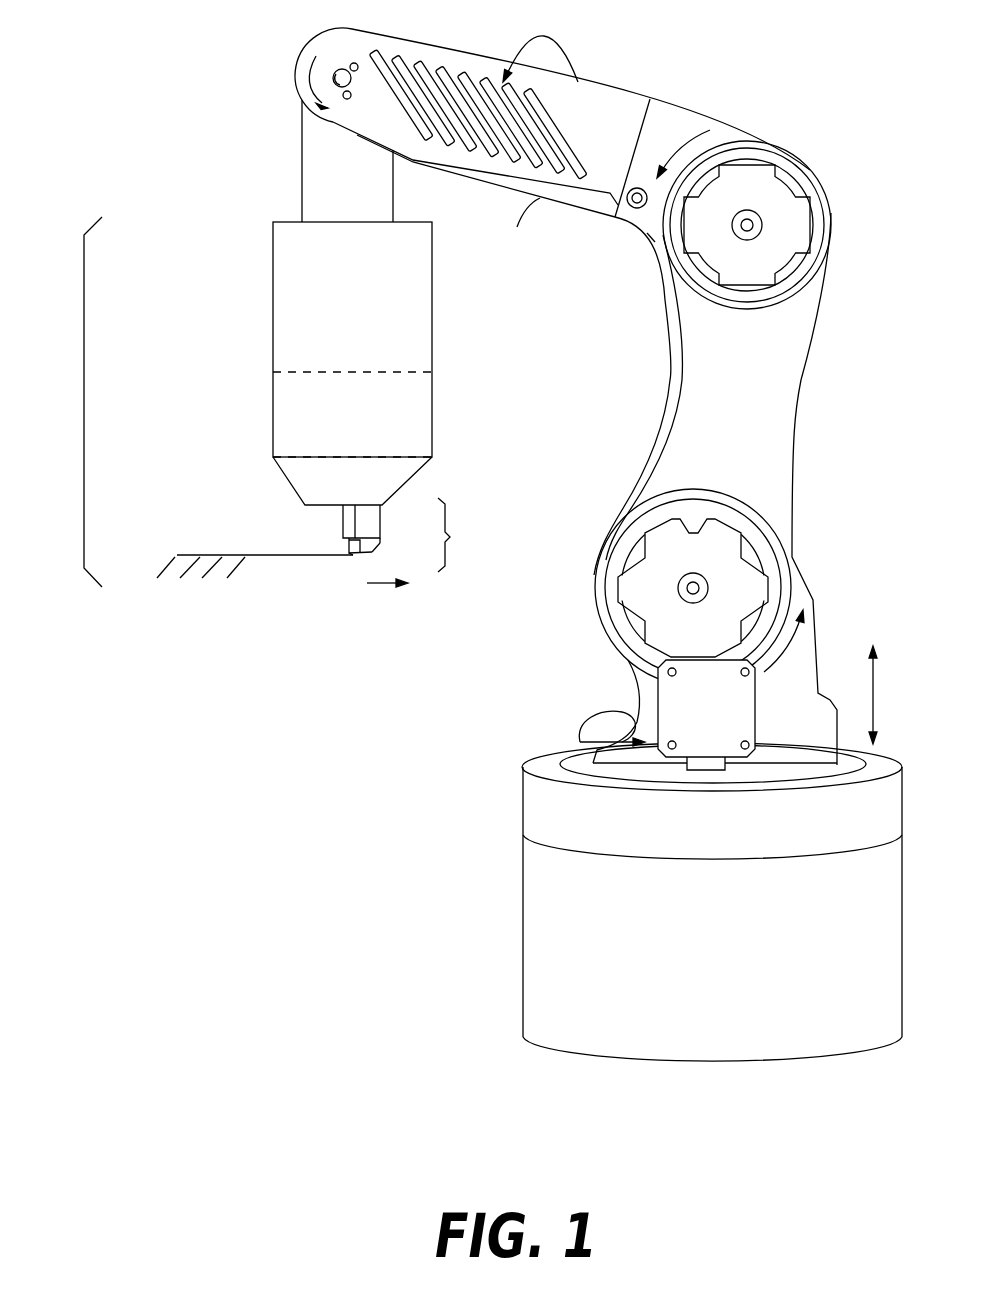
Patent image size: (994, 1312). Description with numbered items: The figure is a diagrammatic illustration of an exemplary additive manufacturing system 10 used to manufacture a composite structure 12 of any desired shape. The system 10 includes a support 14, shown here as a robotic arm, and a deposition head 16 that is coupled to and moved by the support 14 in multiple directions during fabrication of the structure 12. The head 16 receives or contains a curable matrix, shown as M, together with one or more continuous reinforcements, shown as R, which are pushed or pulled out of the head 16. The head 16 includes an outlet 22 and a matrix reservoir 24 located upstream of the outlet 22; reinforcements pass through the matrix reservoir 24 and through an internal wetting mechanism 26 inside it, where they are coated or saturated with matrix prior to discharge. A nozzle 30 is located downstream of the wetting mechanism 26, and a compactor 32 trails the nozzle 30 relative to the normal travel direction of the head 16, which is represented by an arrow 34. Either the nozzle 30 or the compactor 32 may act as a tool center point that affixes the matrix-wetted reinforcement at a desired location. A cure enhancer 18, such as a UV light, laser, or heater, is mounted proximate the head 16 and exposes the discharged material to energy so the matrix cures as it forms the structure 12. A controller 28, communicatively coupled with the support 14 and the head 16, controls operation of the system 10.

The system 10 is at (322, 798).
The composite structure 12 is at (168, 572).
The support 14 is at (737, 452).
The deposition head 16 is at (84, 402).
The cure enhancer 18 is at (344, 540).
The outlet 22 is at (451, 537).
The matrix reservoir 24 is at (273, 355).
The wetting mechanism 26 is at (364, 428).
The controller 28 is at (719, 720).
The nozzle 30 is at (372, 531).
The compactor 32 is at (352, 556).
The arrow 34 is at (374, 585).